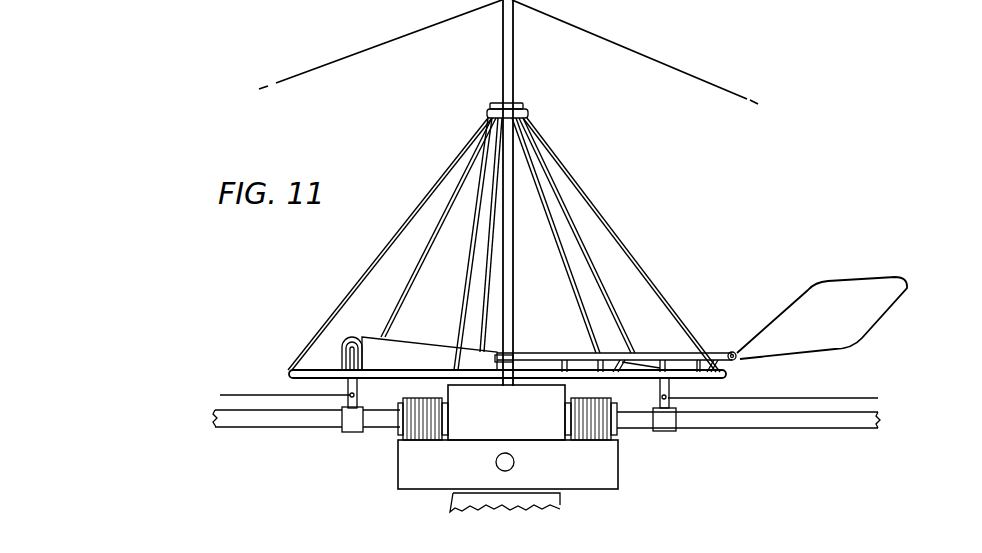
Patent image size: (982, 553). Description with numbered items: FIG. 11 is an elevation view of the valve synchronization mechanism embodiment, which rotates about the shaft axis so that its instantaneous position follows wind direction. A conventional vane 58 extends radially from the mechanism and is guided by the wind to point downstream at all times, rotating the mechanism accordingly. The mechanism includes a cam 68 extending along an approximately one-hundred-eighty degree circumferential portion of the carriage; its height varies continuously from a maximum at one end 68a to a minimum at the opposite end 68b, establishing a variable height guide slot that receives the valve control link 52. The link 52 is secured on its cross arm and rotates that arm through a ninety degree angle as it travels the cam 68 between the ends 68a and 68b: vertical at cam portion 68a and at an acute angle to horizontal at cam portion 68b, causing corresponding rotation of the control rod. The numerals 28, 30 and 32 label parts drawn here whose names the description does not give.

The rollers 28 is at (425, 418).
The housing 30 is at (540, 412).
The base 32 is at (562, 463).
The valve control link 52 is at (355, 418).
The vane 58 is at (856, 303).
The cam 68 is at (424, 357).
The maximum height end of cam 68a is at (352, 340).
The minimum height end of cam 68b is at (672, 370).